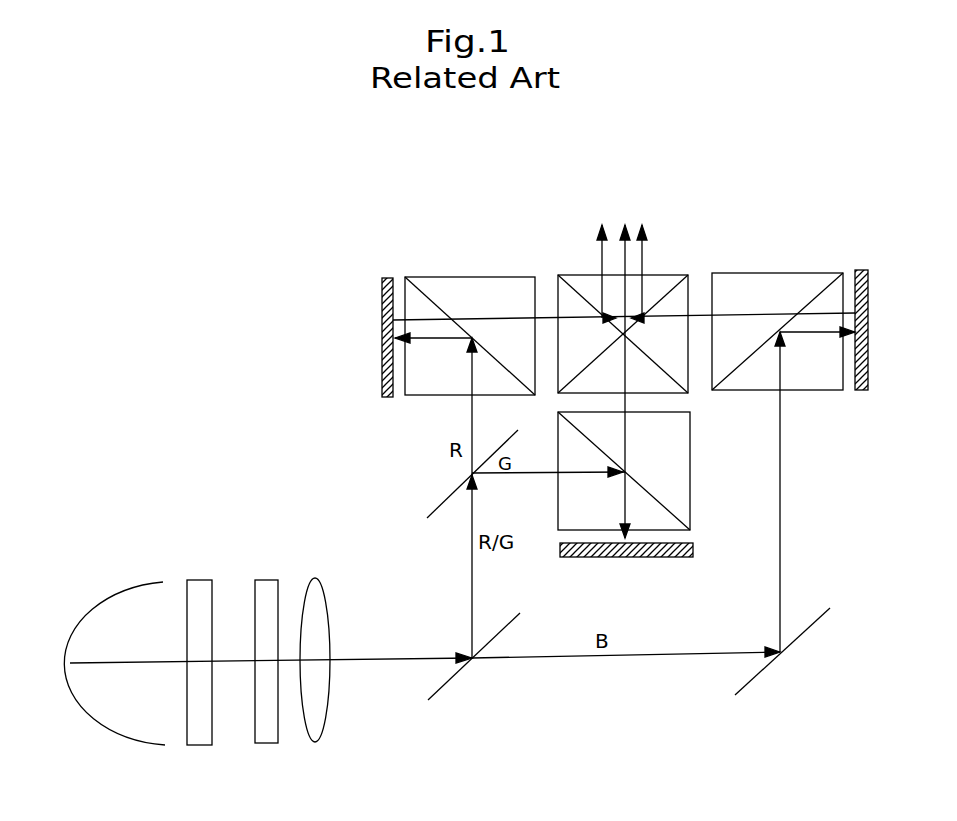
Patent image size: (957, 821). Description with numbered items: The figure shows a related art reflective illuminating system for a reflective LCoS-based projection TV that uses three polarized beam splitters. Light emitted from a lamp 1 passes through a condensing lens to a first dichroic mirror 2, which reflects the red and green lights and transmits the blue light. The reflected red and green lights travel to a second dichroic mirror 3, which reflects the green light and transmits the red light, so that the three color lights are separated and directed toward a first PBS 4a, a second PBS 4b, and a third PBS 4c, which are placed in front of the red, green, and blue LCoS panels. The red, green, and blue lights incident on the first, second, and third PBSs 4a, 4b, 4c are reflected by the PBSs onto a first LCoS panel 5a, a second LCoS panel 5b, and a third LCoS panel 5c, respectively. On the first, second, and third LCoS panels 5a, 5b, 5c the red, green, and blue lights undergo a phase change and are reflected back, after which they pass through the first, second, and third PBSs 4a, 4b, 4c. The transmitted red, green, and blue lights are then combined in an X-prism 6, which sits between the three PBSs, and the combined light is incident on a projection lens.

The lamp 1 is at (142, 582).
The first dichroic mirror 2 is at (447, 678).
The second dichroic mirror 3 is at (448, 497).
The first PBS 4a is at (497, 299).
The second PBS 4b is at (677, 488).
The third PBS 4c is at (803, 367).
The first LCoS panel 5a is at (393, 310).
The second LCoS panel 5b is at (665, 556).
The third LCoS panel 5c is at (868, 338).
The X-prism 6 is at (668, 280).